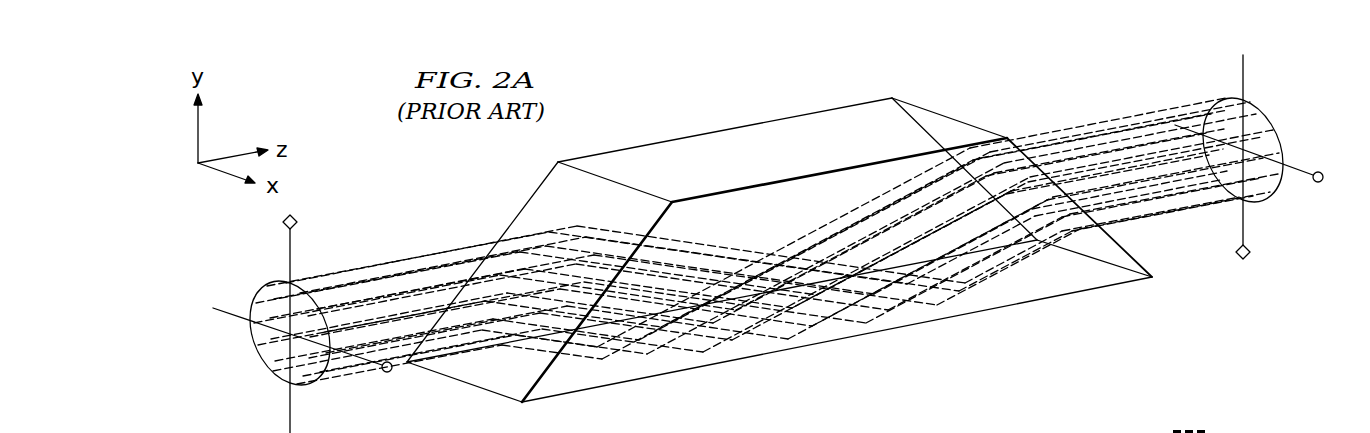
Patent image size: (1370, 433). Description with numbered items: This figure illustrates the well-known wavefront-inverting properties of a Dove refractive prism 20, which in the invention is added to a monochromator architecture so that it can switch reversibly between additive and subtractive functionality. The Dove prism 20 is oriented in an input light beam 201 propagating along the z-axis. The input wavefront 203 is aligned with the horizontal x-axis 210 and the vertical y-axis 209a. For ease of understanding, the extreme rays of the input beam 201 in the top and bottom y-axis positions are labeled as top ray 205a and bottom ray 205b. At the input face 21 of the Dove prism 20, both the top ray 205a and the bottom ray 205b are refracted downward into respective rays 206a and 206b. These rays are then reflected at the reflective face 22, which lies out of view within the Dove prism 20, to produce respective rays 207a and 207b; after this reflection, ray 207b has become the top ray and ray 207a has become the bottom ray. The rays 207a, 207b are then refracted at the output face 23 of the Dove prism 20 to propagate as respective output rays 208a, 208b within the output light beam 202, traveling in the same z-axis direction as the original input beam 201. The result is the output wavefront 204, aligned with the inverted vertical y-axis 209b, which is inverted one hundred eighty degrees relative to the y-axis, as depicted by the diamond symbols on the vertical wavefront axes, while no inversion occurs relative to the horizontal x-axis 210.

The Dove refractive prism 20 is at (692, 118).
The input face 21 is at (546, 192).
The reflective face 22 is at (932, 306).
The output face 23 is at (944, 129).
The input light beam 201 is at (397, 244).
The output light beam 202 is at (1076, 114).
The input wavefront 203 is at (265, 287).
The output wavefront 204 is at (1263, 112).
The top ray 205a is at (353, 272).
The bottom ray 205b is at (332, 370).
The ray 206a is at (700, 250).
The ray 206b is at (543, 343).
The ray 207a is at (983, 268).
The ray 207b is at (833, 233).
The output ray 208a is at (1165, 213).
The output ray 208b is at (1142, 122).
The vertical y-axis 209a is at (287, 402).
The inverted vertical y-axis 209b is at (1245, 223).
The horizontal x-axis 210 is at (227, 313).